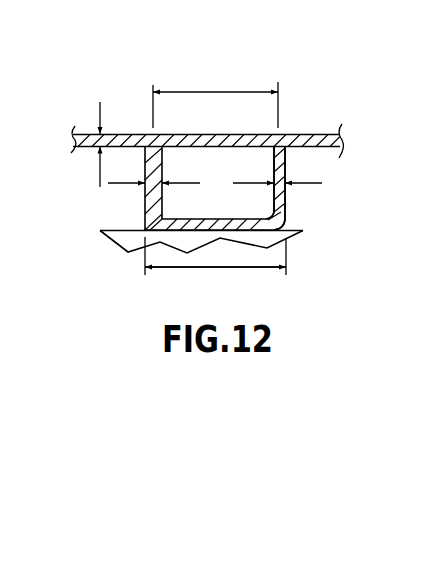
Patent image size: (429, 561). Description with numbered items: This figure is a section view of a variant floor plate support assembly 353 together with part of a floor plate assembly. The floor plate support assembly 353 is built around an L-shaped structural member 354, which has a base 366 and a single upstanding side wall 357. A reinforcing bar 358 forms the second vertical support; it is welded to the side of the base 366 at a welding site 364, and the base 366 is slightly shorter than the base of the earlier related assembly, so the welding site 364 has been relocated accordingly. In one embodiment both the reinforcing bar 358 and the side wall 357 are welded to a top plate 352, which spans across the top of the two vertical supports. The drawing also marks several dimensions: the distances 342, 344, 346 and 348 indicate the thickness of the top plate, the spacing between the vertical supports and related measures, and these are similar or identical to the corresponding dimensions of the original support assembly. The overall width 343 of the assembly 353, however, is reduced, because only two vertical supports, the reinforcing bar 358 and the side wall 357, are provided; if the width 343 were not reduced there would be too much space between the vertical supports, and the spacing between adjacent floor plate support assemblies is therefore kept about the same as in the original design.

The distance 342 is at (100, 173).
The width 343 is at (235, 268).
The distance 344 is at (320, 175).
The distance 346 is at (213, 88).
The distance 348 is at (183, 177).
The top plate 352 is at (128, 132).
The floor plate support assembly 353 is at (285, 206).
The L-shaped structural member 354 is at (151, 228).
The side wall 357 is at (285, 157).
The reinforcing bar 358 is at (162, 165).
The welding site 364 is at (163, 218).
The base 366 is at (188, 236).